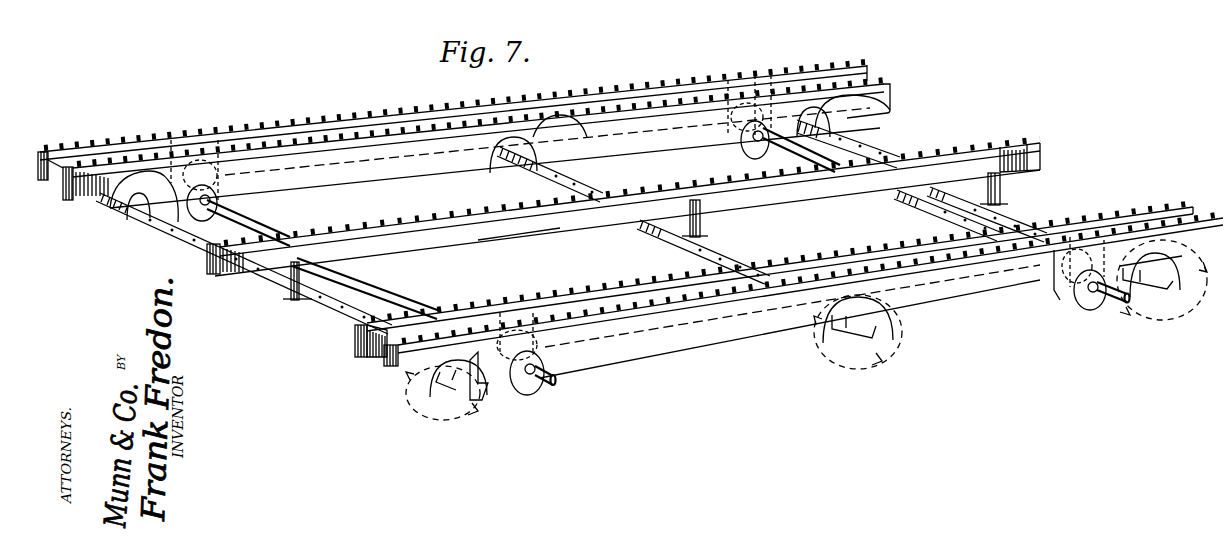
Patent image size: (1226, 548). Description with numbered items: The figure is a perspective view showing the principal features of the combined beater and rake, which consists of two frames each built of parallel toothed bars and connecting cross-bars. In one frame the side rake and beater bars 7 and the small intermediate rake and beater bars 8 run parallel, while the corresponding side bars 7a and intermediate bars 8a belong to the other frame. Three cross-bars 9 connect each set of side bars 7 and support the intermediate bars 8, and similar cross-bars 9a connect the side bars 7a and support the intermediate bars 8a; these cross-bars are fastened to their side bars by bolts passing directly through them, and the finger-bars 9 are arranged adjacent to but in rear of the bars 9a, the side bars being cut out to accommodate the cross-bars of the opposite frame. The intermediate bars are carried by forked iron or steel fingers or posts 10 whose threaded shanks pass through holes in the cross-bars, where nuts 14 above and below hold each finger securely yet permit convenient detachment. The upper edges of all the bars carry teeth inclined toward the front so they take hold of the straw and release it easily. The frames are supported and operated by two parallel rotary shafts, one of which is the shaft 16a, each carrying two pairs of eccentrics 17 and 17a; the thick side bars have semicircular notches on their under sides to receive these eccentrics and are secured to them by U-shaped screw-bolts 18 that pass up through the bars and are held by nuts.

The side rake and beater bar 7 is at (1177, 258).
The side rake and beater bar 7a is at (666, 277).
The intermediate rake and beater bar 8 is at (1008, 140).
The intermediate rake and beater bar 8a is at (480, 240).
The cross-bar 9 is at (880, 339).
The cross-bar 9a is at (879, 144).
The finger or post 10 is at (1003, 190).
The nut 14 is at (1004, 203).
The rotary shaft 16a is at (917, 198).
The eccentric 17 is at (1091, 308).
The eccentric 17a is at (1068, 290).
The U-shaped screw-bolt 18 is at (1052, 312).